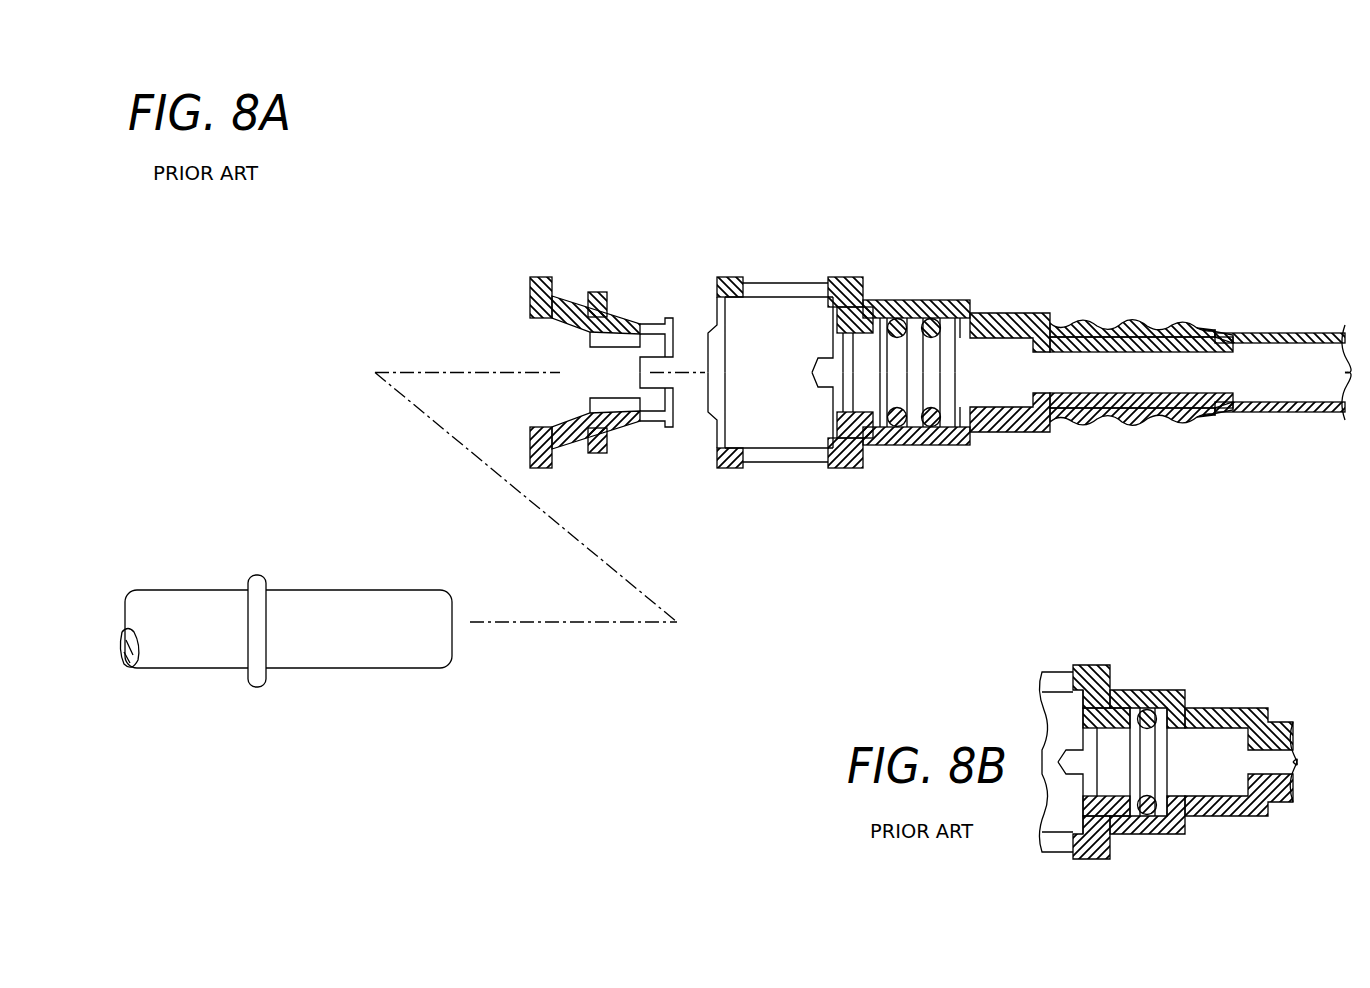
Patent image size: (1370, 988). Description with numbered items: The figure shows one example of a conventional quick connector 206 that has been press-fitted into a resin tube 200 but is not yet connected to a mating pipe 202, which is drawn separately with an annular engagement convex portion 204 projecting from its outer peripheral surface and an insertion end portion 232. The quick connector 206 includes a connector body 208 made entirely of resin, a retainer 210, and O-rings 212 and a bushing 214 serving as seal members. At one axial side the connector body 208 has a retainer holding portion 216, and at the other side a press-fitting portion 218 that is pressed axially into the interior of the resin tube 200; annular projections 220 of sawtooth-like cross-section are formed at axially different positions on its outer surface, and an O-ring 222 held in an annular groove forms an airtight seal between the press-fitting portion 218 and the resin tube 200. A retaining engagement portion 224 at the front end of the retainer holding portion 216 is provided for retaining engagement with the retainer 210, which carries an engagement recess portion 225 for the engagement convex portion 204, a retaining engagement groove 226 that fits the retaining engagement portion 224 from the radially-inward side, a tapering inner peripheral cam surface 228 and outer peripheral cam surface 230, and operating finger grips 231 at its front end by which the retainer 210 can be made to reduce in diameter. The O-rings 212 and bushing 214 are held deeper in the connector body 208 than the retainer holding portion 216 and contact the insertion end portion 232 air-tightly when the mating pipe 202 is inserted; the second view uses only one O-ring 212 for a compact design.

In FIG. 8A, the resin tube 200 is at (1290, 320).
In FIG. 8A, the mating pipe 202 is at (286, 612).
In FIG. 8A, the engagement convex portion 204 is at (253, 676).
In FIG. 8A, the quick connector 206 is at (965, 316).
In FIG. 8A, the connector body 208 is at (1101, 330).
In FIG. 8B, the connector body 208 is at (1187, 646).
In FIG. 8A, the retainer 210 is at (566, 334).
In FIG. 8A, the O-rings 212 is at (925, 440).
In FIG. 8B, the O-rings 212 is at (1141, 822).
In FIG. 8A, the bushing 214 is at (857, 437).
In FIG. 8B, the bushing 214 is at (1101, 858).
In FIG. 8A, the retainer holding portion 216 is at (840, 266).
In FIG. 8B, the retainer holding portion 216 is at (1087, 652).
In FIG. 8A, the press-fitting portion 218 is at (1143, 320).
In FIG. 8A, the annular projections 220 is at (1116, 428).
In FIG. 8A, the O-ring 222 is at (1163, 432).
In FIG. 8A, the retaining engagement portion 224 is at (731, 275).
In FIG. 8A, the engagement recess portion 225 is at (657, 428).
In FIG. 8A, the retaining engagement groove 226 is at (547, 320).
In FIG. 8A, the inner peripheral cam surface 228 is at (560, 420).
In FIG. 8A, the outer peripheral cam surface 230 is at (628, 292).
In FIG. 8A, the operating finger grips 231 is at (548, 276).
In FIG. 8A, the insertion end portion 232 is at (380, 645).